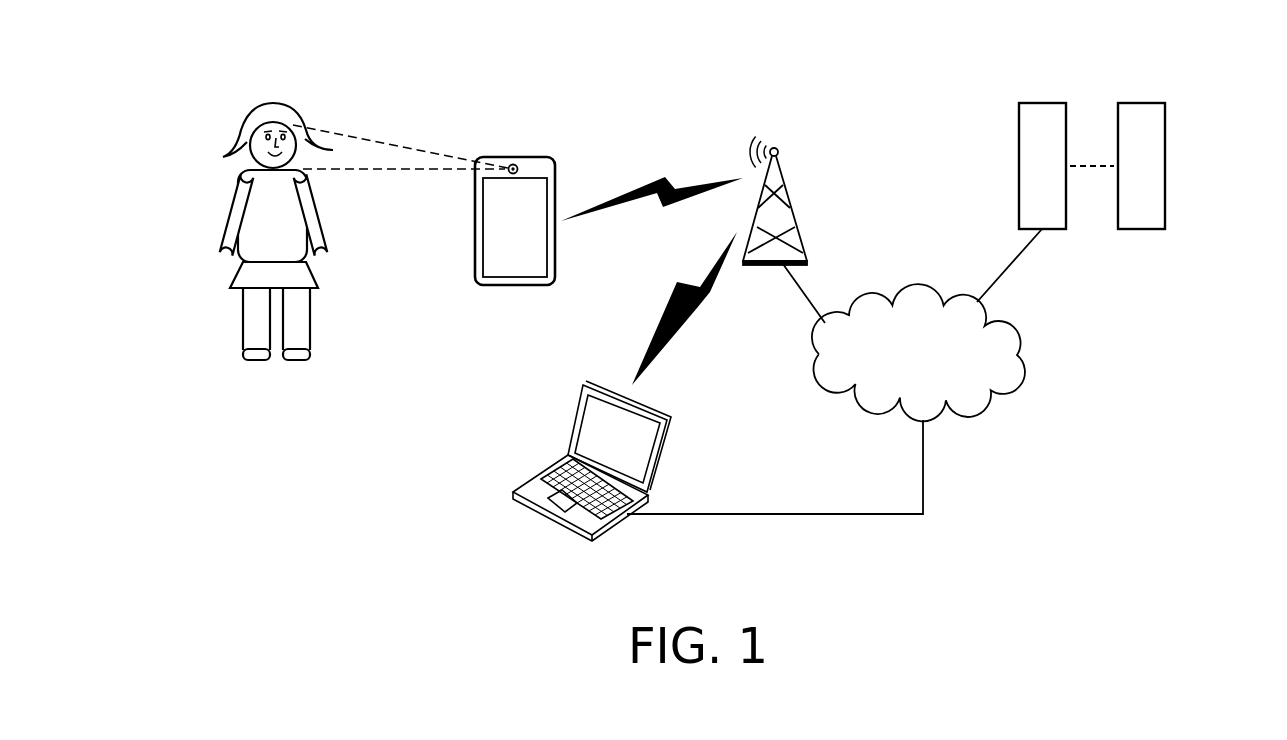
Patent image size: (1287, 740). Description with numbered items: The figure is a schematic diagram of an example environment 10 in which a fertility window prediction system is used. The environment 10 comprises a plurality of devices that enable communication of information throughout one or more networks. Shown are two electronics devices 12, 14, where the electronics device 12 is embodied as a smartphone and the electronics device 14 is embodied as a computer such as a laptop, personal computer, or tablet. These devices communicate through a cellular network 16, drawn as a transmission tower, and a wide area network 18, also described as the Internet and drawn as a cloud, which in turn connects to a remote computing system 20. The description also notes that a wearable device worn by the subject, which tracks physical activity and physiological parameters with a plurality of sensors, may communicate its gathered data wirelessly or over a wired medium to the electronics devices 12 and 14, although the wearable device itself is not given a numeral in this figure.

The environment 10 is at (222, 113).
The electronics device 12 is at (498, 226).
The electronics device 14 is at (598, 449).
The cellular network 16 is at (797, 183).
The wide area network 18 is at (911, 367).
The remote computing system 20 is at (1175, 167).